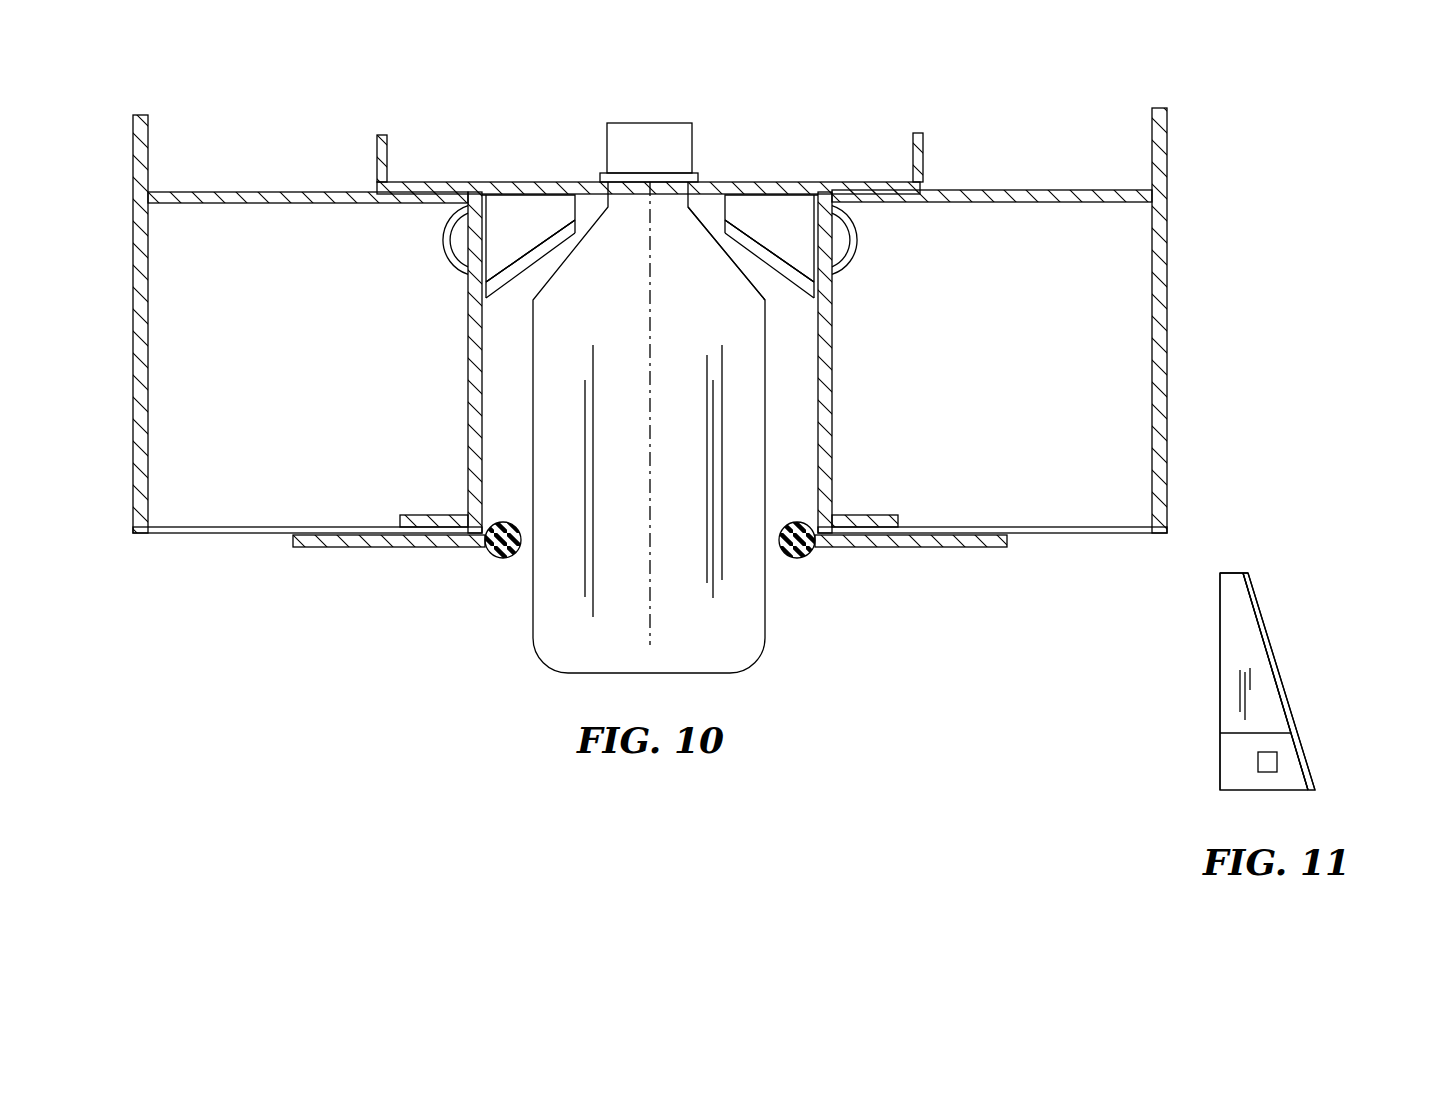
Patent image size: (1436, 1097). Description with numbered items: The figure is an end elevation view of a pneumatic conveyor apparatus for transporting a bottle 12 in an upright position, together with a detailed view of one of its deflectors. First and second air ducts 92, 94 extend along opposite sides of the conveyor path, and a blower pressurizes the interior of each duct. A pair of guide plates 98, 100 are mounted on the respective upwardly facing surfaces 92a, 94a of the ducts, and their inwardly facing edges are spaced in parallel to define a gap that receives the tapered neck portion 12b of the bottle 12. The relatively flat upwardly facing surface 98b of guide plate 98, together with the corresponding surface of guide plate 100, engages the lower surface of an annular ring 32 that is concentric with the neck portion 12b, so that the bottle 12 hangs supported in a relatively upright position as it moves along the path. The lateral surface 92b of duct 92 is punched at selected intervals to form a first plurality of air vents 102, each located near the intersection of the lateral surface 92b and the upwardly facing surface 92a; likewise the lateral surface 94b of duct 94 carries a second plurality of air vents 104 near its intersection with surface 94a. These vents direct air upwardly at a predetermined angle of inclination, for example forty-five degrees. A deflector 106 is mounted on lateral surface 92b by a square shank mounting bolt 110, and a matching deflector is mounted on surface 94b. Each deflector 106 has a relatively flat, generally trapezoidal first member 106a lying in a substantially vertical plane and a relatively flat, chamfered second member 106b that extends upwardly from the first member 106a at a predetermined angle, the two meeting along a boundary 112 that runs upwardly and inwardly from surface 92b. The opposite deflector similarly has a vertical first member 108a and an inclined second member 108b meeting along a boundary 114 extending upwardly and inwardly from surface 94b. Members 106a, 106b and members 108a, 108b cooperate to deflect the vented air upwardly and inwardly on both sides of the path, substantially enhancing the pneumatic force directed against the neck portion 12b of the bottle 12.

In FIG. 10, the bottle 12 is at (634, 115).
In FIG. 10, the tapered neck portion 12b is at (700, 218).
In FIG. 10, the annular ring 32 is at (678, 172).
In FIG. 10, the first air duct 92 is at (133, 278).
In FIG. 10, the upwardly facing surface of first duct 92a is at (220, 192).
In FIG. 10, the lateral surface of first duct 92b is at (482, 367).
In FIG. 10, the second air duct 94 is at (1168, 250).
In FIG. 10, the upwardly facing surface of second duct 94a is at (1063, 190).
In FIG. 10, the lateral surface of second duct 94b is at (818, 367).
In FIG. 10, the guide plate 98 is at (376, 148).
In FIG. 10, the upwardly facing surface of guide plate 98b is at (455, 182).
In FIG. 10, the guide plate 100 is at (927, 147).
In FIG. 10, the first plurality of air vents 102 is at (457, 243).
In FIG. 10, the second plurality of air vents 104 is at (843, 243).
In FIG. 11, the deflector 106 is at (1237, 565).
In FIG. 10, the first member of deflector 106a is at (552, 207).
In FIG. 11, the first member of deflector 106a is at (1237, 600).
In FIG. 10, the second member of deflector 106b is at (518, 268).
In FIG. 11, the second member of deflector 106b is at (1290, 700).
In FIG. 10, the first member of deflector 108a is at (762, 205).
In FIG. 10, the second member of deflector 108b is at (758, 252).
In FIG. 11, the square shank mounting bolt 110 is at (1272, 768).
In FIG. 10, the boundary 112 is at (523, 254).
In FIG. 11, the boundary 112 is at (1265, 648).
In FIG. 10, the boundary 114 is at (777, 254).